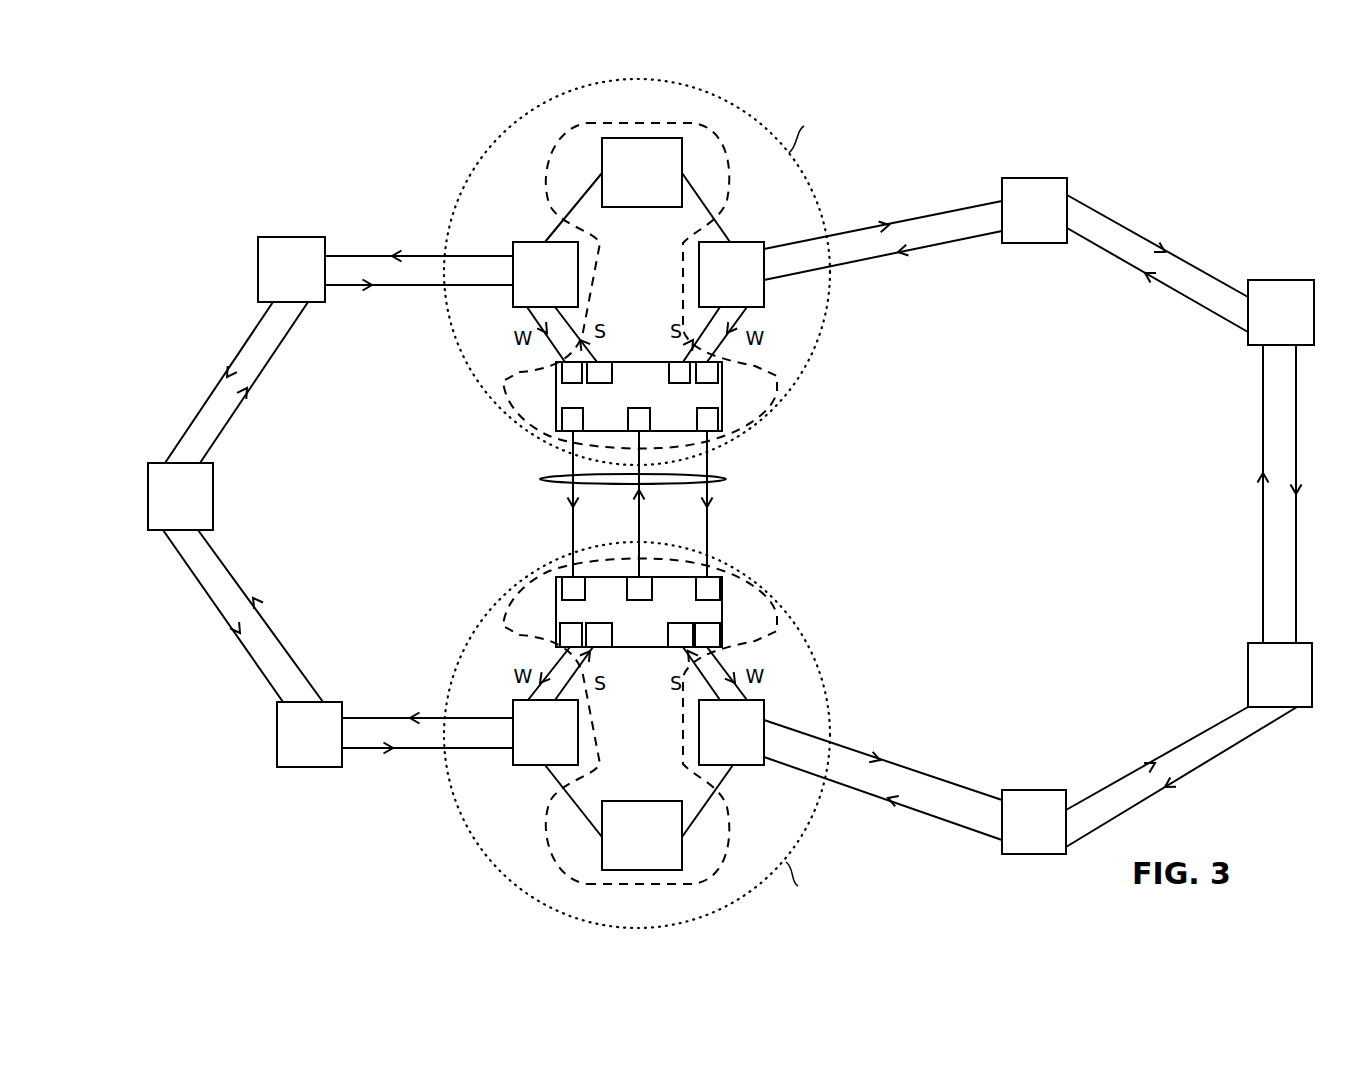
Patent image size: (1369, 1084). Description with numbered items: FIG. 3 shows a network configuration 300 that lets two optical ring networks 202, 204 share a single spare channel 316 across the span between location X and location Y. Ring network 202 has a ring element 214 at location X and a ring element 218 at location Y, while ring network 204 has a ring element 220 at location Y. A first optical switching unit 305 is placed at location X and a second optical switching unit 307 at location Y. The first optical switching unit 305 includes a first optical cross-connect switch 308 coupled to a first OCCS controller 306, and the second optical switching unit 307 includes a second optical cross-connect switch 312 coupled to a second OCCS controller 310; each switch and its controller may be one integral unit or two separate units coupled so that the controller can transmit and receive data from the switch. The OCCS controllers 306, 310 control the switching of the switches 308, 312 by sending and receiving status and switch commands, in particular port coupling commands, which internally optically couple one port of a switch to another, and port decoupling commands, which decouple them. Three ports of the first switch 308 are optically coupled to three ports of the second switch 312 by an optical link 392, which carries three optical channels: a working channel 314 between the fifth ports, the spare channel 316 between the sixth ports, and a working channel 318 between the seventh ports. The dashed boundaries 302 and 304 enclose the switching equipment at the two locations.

The optical ring network 202 is at (341, 210).
The optical ring network 204 is at (1224, 206).
The ring element 214 is at (545, 242).
The ring element 218 is at (540, 765).
The ring element 220 is at (746, 765).
The network configuration 300 is at (764, 408).
The cross-connect subsystem boundary at Location X 302 is at (604, 124).
The cross-connect subsystem boundary at Location Y 304 is at (602, 864).
The first optical switching unit 305 is at (549, 200).
The first OCCS controller 306 is at (682, 160).
The second optical switching unit 307 is at (512, 607).
The first optical cross-connect switch 308 is at (722, 413).
The second OCCS controller 310 is at (682, 848).
The second optical cross-connect switch 312 is at (722, 604).
The working channel 314 is at (538, 504).
The spare channel 316 is at (666, 504).
The working channel 318 is at (743, 528).
The optical link 392 is at (718, 477).